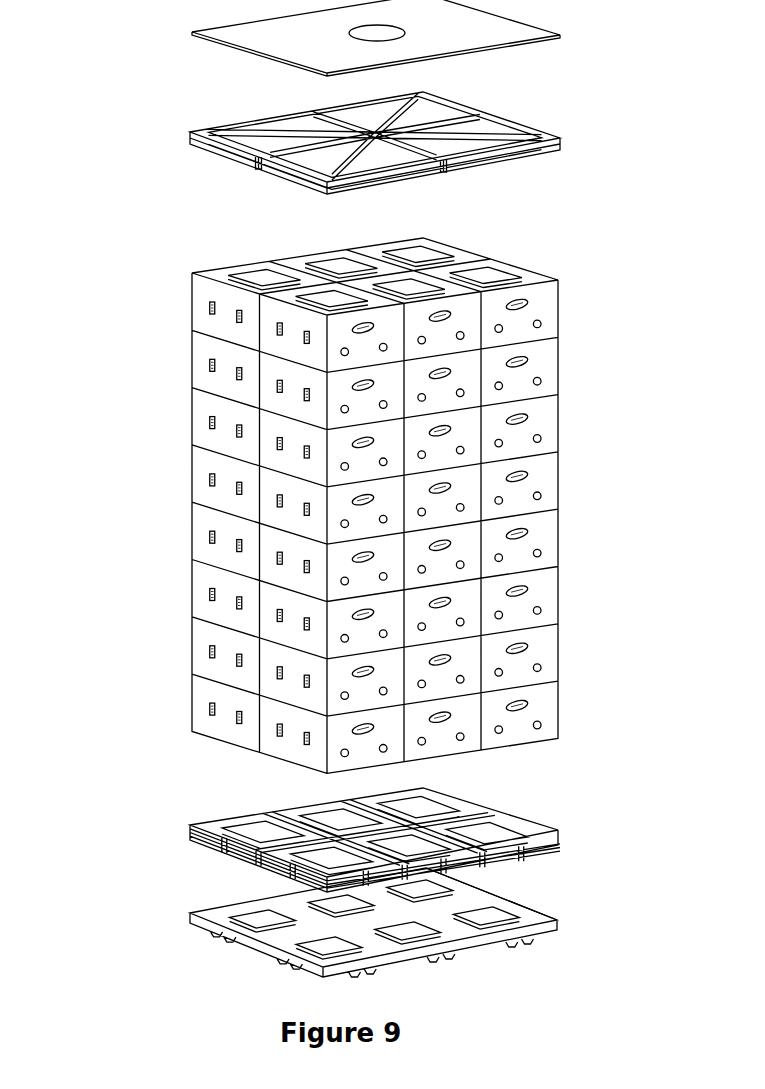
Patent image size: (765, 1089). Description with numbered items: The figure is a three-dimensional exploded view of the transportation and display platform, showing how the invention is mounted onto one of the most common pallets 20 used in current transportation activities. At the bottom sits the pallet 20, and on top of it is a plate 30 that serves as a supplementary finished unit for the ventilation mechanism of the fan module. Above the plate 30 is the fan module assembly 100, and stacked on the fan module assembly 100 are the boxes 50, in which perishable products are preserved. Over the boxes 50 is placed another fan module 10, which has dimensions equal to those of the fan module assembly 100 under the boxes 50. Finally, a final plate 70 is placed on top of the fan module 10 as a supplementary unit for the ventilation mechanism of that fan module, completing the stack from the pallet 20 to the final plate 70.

The final plate 70 is at (588, 38).
The fan module 10 is at (574, 141).
The boxes 50 is at (575, 377).
The fan module assembly 100 is at (147, 843).
The plate 30 is at (534, 910).
The common pallets 20 is at (573, 933).